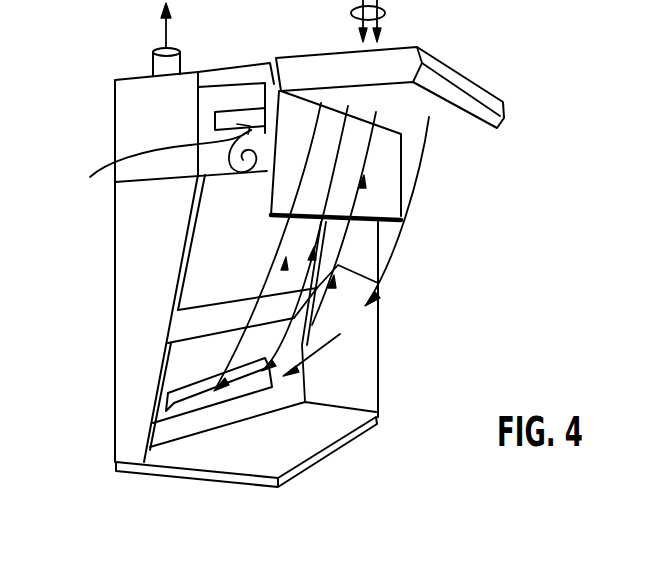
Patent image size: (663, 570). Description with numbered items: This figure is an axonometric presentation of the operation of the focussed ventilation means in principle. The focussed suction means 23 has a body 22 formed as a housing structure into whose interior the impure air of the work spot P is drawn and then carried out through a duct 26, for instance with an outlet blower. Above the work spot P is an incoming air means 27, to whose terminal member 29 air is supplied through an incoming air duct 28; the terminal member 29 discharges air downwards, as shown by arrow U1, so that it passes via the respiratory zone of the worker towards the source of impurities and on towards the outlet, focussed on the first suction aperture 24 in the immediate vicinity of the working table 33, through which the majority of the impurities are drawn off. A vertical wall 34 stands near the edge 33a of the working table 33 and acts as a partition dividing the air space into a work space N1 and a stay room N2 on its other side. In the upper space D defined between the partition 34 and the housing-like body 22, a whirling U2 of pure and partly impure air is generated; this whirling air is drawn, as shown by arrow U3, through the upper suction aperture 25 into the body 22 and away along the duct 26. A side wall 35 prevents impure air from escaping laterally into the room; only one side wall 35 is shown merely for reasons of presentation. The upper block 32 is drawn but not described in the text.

The body 22 is at (125, 240).
The focussed suction means 23 is at (112, 308).
The first suction aperture 24 is at (168, 410).
The second suction aperture 25 is at (215, 124).
The duct 26 is at (152, 57).
The incoming air means 27 is at (438, 42).
The incoming air duct 28 is at (353, 17).
The terminal member 29 is at (472, 74).
The upper housing block 32 is at (227, 68).
The working table 33 is at (262, 465).
The edge of the working table 33a is at (348, 435).
The vertical wall 34 is at (390, 212).
The side wall 35 is at (363, 350).
The upper space D is at (230, 108).
The work space N1 is at (251, 221).
The stay room N2 is at (453, 181).
The incoming air flow U1 is at (380, 288).
The whirling air flow U2 is at (224, 182).
The suction air flow U3 is at (154, 160).
The work spot P is at (275, 435).